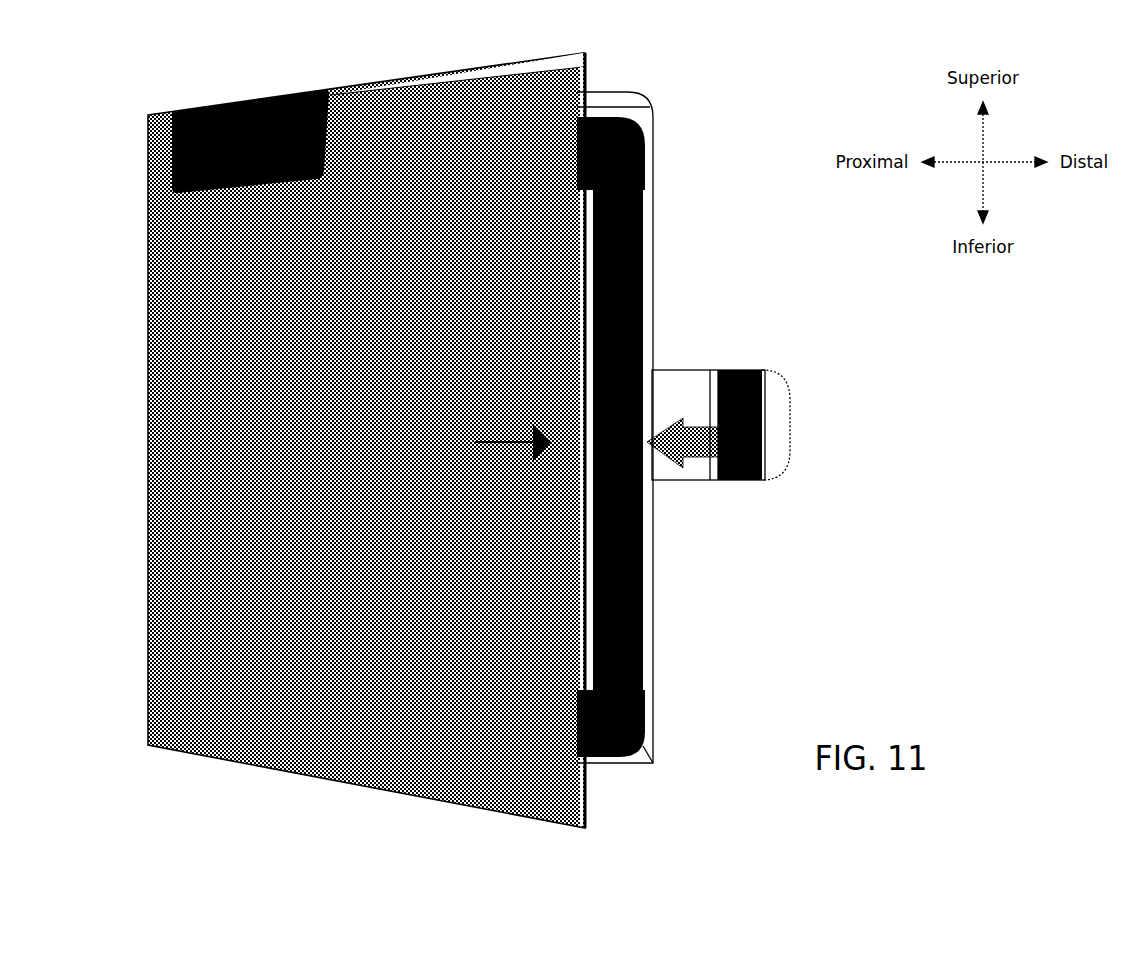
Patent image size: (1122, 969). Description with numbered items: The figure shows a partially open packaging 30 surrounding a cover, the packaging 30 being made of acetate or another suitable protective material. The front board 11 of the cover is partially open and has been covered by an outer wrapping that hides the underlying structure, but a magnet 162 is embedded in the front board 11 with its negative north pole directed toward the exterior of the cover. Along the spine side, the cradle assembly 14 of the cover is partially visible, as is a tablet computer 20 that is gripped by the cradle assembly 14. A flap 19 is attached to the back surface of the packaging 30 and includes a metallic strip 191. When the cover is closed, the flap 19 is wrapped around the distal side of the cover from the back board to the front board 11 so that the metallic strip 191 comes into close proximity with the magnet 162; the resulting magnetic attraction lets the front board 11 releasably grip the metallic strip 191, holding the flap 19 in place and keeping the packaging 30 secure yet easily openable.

The packaging 30 is at (366, 420).
The front board 11 is at (374, 331).
The magnet 162 is at (401, 497).
The cradle assembly 14 is at (633, 122).
The tablet computer 20 is at (648, 224).
The flap 19 is at (719, 425).
The metallic strip 191 is at (728, 482).